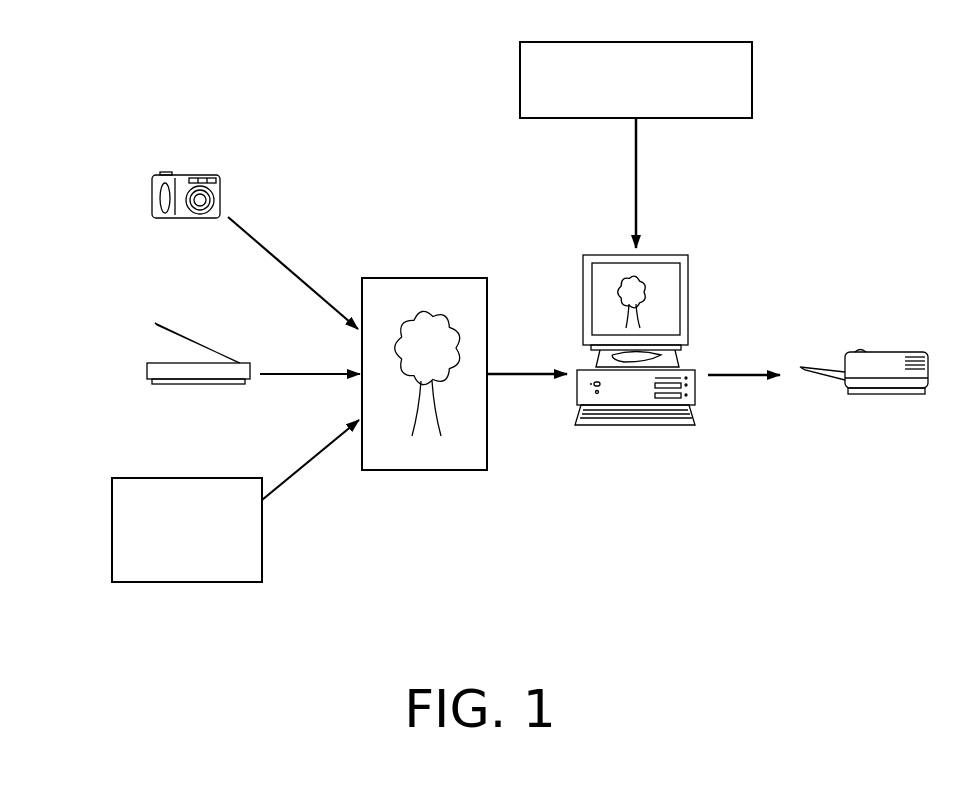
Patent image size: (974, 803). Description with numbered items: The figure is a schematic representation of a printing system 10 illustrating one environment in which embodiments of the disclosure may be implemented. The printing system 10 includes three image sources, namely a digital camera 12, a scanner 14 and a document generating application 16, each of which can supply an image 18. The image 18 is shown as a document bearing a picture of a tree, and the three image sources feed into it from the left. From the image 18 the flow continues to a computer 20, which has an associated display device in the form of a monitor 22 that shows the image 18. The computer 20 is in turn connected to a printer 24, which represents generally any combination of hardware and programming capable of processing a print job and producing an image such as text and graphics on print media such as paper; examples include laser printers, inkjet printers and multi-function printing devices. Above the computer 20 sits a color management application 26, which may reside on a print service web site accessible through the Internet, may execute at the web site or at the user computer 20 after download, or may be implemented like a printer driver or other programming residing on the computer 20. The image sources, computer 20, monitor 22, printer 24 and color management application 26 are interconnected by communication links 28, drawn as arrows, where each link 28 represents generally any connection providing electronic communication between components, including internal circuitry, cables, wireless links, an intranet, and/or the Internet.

The printing system 10 is at (845, 190).
The digital camera 12 is at (155, 202).
The scanner 14 is at (150, 372).
The document generating application 16 is at (120, 537).
The image 18 is at (429, 286).
The computer 20 is at (693, 391).
The display device 22 is at (672, 299).
The printer 24 is at (875, 388).
The color management application 26 is at (641, 48).
The communication link 28 is at (634, 182).